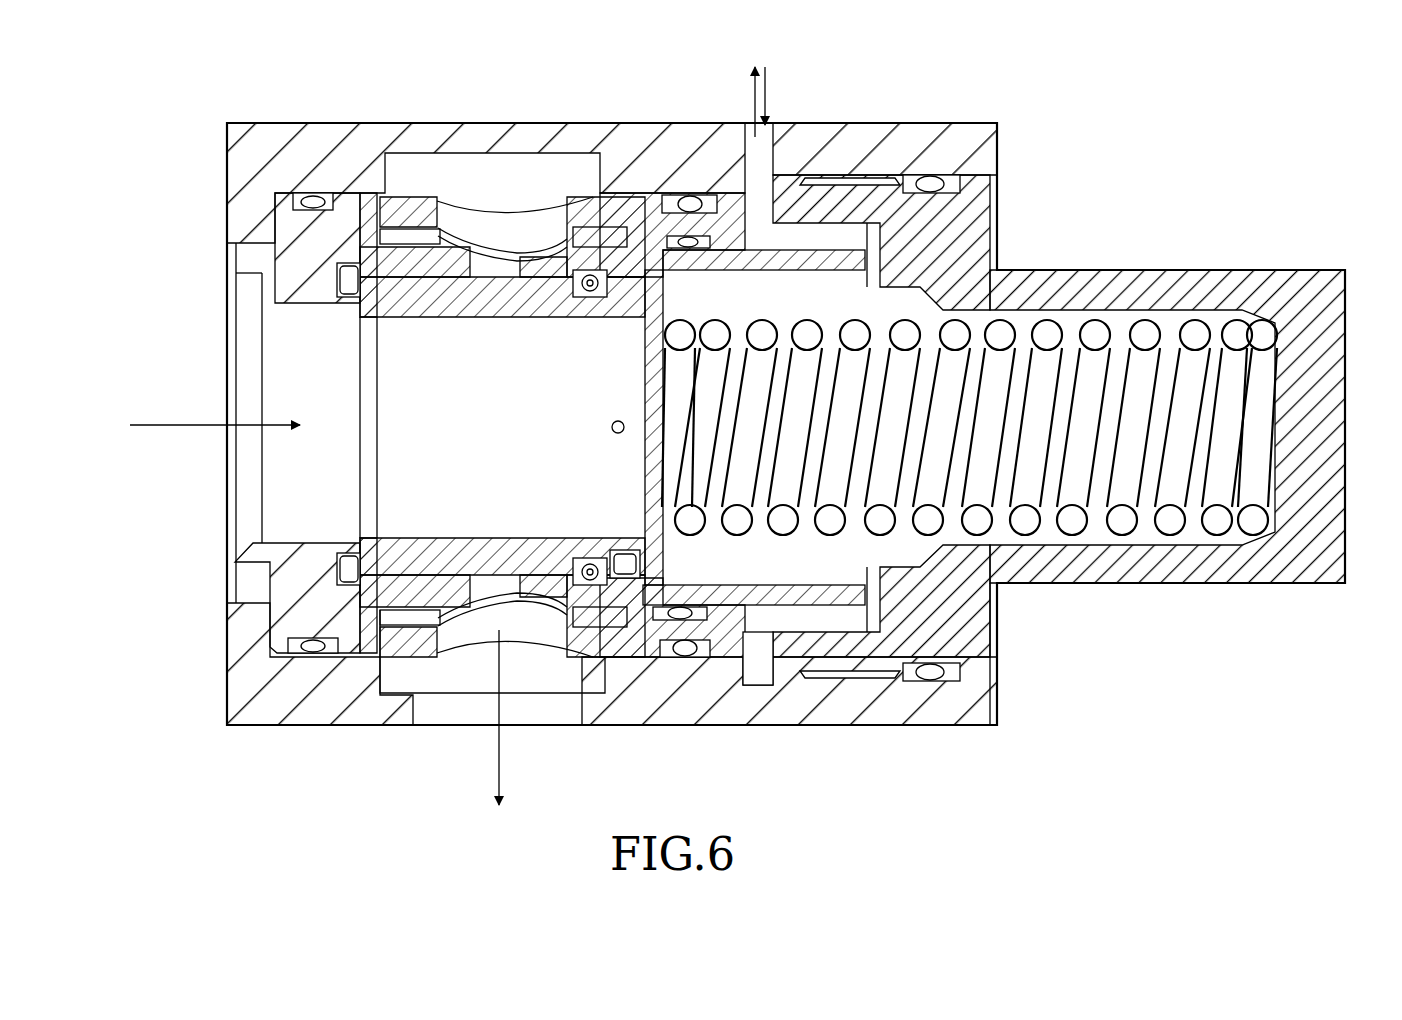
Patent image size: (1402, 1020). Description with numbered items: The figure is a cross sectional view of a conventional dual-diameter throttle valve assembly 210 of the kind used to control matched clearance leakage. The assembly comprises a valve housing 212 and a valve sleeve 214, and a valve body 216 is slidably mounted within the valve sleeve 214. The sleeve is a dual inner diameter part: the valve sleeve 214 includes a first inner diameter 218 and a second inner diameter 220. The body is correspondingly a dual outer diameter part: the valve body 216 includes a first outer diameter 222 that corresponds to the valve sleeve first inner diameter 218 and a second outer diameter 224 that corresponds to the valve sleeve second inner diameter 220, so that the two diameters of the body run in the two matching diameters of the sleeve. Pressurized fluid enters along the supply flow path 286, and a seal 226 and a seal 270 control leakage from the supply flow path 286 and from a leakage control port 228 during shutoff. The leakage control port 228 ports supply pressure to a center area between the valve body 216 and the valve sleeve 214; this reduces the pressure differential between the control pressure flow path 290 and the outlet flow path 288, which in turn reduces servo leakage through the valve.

The dual-diameter throttle valve assembly 210 is at (1042, 140).
The valve housing 212 is at (890, 138).
The valve sleeve 214 is at (838, 606).
The valve body 216 is at (522, 540).
The first inner diameter 218 is at (362, 550).
The second inner diameter 220 is at (695, 572).
The first outer diameter 222 is at (447, 573).
The second outer diameter 224 is at (622, 548).
The seal 226 is at (586, 582).
The leakage control port 228 is at (606, 300).
The seal 270 is at (300, 656).
The supply flow path 286 is at (175, 414).
The outlet flow path 288 is at (497, 748).
The control pressure flow path 290 is at (762, 82).